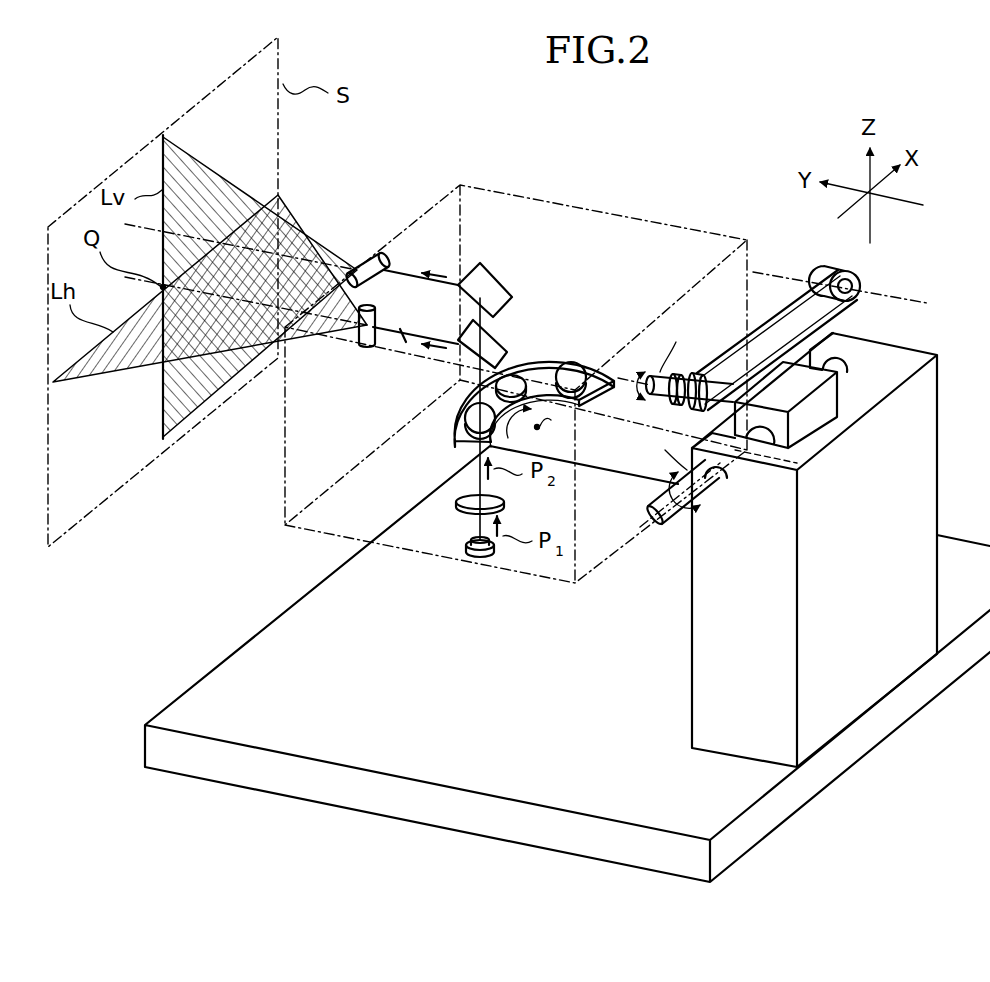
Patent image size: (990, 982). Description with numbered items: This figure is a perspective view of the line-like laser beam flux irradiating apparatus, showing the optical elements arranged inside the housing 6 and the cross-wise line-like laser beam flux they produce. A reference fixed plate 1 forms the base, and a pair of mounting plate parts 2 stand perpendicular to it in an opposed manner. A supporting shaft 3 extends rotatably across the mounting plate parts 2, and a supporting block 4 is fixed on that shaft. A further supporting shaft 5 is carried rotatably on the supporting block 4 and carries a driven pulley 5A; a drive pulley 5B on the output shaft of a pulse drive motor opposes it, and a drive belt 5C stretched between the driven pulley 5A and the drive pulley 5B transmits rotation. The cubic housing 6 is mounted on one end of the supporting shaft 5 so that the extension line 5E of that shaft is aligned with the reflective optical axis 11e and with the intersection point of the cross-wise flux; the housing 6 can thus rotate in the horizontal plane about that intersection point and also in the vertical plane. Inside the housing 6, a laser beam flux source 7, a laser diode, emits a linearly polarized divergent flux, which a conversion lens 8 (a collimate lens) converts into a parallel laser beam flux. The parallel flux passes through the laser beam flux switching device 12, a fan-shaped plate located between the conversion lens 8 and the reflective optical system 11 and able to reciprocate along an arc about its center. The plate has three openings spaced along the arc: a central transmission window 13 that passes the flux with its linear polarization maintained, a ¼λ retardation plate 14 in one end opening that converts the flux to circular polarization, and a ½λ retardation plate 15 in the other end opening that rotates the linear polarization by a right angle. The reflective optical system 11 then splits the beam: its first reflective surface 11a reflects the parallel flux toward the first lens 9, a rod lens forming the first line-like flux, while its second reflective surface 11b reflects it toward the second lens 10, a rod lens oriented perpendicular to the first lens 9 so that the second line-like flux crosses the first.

The reference fixed plate 1 is at (440, 746).
The mounting plate part 2 is at (872, 348).
The supporting shaft 3 is at (708, 478).
The supporting block 4 is at (810, 383).
The supporting shaft 5 is at (697, 375).
The driven pulley 5A is at (705, 378).
The drive pulley 5B is at (850, 272).
The drive belt 5C is at (790, 290).
The extension line 5E is at (665, 374).
The housing 6 is at (648, 222).
The laser beam flux source 7 is at (479, 557).
The conversion lens 8 is at (505, 502).
The first lens 9 is at (373, 258).
The second lens 10 is at (360, 336).
The reflective optical system 11 is at (468, 284).
The first reflective surface 11a is at (482, 284).
The second reflective surface 11b is at (470, 333).
The reflective optical axis 11e is at (403, 340).
The laser beam flux switching device 12 is at (455, 432).
The transmission window 13 is at (519, 368).
The ¼λ retardation plate 14 is at (467, 410).
The ½λ retardation plate 15 is at (576, 364).